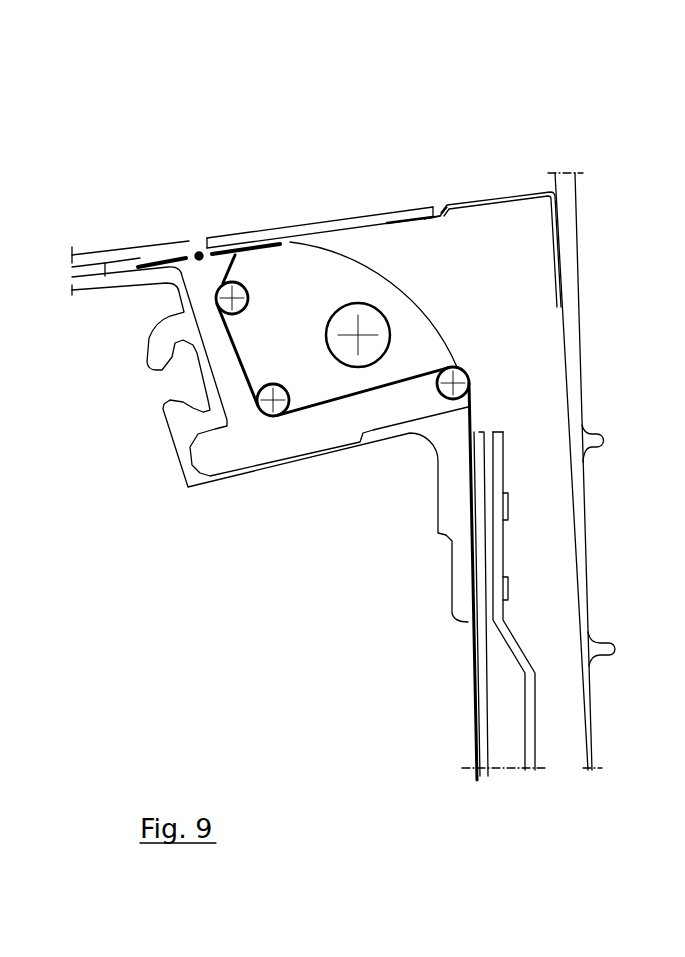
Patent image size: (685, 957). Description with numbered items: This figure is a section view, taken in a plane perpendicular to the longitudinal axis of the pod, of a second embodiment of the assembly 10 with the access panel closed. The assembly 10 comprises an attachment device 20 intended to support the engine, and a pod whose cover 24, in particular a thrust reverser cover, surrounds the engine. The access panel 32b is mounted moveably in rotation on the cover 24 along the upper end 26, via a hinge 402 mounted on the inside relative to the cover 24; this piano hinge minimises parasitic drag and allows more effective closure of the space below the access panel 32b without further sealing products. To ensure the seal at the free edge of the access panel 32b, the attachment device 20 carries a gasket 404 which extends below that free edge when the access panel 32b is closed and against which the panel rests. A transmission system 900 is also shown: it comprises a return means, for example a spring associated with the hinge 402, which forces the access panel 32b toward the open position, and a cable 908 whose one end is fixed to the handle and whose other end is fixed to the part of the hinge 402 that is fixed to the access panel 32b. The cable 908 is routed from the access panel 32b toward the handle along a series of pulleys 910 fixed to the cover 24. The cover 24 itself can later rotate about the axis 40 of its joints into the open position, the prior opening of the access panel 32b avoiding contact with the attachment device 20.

The assembly 10 is at (154, 186).
The attachment device 20 is at (532, 148).
The cover 24 is at (100, 257).
The upper end 26 is at (190, 248).
The access panel 32b is at (333, 218).
The axis 40 is at (360, 334).
The hinge 402 is at (205, 252).
The gasket 404 is at (440, 218).
The transmission system 900 is at (200, 558).
The cable 908 is at (318, 407).
The pulleys 910 is at (216, 298).